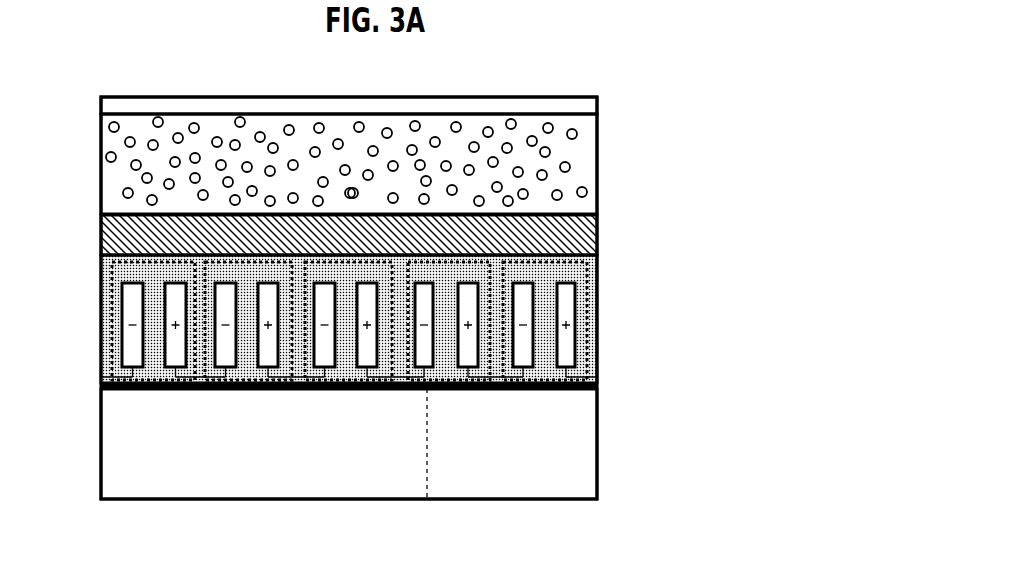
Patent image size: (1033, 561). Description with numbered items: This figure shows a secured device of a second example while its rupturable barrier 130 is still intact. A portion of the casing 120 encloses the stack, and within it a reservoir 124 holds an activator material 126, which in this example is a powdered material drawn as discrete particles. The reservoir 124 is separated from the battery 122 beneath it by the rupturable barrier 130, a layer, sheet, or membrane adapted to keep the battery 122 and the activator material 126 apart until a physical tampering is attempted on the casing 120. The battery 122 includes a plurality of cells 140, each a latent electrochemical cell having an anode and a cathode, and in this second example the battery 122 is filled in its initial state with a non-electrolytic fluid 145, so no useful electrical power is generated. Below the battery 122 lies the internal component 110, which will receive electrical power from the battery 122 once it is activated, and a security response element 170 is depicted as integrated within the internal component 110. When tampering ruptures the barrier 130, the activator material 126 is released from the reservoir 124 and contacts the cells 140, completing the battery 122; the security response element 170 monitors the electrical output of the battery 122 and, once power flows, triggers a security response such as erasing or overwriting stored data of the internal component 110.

The casing 120 is at (595, 104).
The reservoir 124 is at (95, 118).
The activator material 126 is at (569, 164).
The rupturable barrier 130 is at (598, 232).
The battery 122 is at (95, 258).
The cell 140 is at (588, 337).
The non-electrolytic fluid 145 is at (552, 379).
The internal component 110 is at (349, 444).
The security response element 170 is at (481, 444).